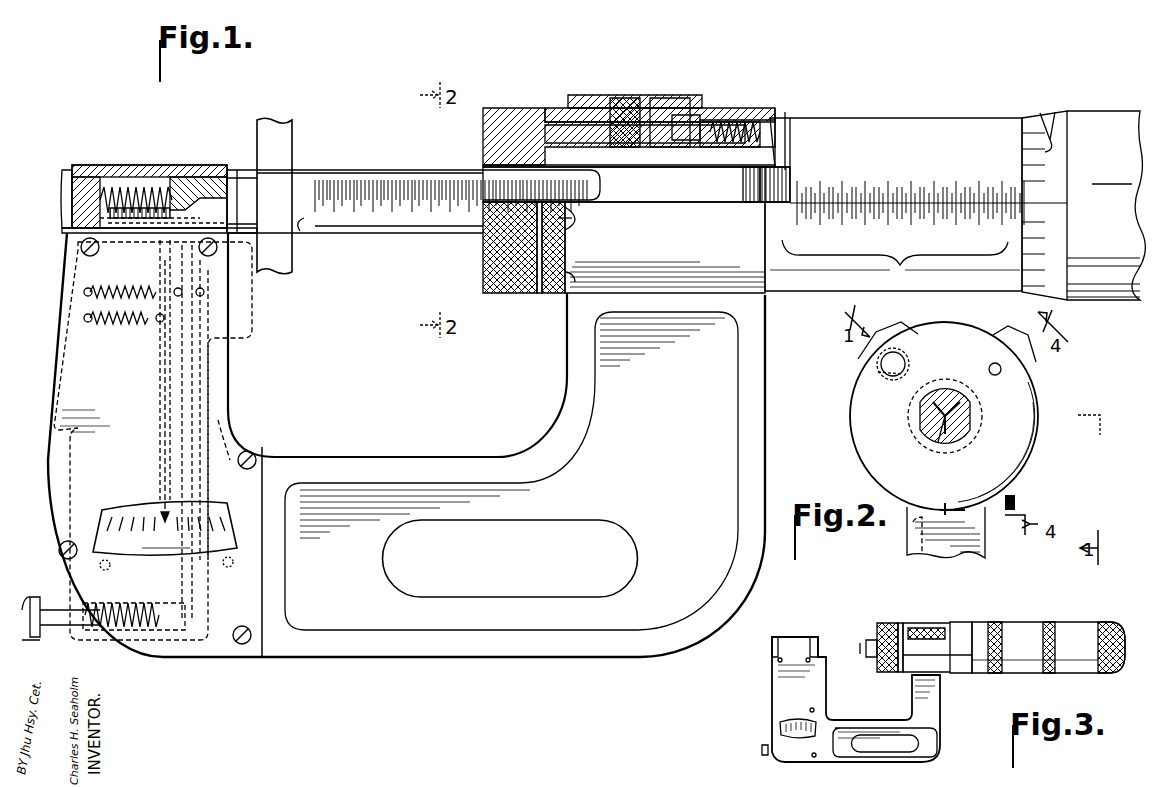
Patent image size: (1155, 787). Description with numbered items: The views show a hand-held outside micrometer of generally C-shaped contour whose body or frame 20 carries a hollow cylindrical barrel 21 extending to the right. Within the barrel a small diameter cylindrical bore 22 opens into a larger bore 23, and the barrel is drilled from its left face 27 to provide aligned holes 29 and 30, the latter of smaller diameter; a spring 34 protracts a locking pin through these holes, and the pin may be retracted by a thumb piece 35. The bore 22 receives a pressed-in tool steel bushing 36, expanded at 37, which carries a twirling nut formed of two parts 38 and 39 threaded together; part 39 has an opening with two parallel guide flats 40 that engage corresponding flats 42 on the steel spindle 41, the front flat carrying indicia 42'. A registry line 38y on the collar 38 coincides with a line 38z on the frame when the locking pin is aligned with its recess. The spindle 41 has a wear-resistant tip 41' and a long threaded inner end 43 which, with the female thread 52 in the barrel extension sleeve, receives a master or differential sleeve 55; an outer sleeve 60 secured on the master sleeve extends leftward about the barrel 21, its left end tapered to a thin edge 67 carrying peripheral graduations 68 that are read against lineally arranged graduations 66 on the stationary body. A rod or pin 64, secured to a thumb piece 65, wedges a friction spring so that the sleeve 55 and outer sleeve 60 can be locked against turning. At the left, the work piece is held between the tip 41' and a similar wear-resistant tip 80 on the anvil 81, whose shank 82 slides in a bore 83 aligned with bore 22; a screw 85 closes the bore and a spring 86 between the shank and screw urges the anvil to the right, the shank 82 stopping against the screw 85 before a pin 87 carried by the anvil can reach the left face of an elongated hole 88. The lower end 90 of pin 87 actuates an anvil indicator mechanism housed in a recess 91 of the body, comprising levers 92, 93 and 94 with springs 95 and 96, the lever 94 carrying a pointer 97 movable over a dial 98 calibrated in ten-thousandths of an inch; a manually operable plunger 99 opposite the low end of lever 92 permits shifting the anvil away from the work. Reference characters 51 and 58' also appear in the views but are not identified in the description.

In FIG. 1, the body or frame 20 is at (779, 370).
In FIG. 2, the body or frame 20 is at (903, 544).
In FIG. 3, the body or frame 20 is at (945, 718).
In FIG. 1, the hollow cylindrical barrel 21 is at (805, 140).
In FIG. 3, the hollow cylindrical barrel 21 is at (955, 622).
In FIG. 1, the small diameter cylindrical bore 22 is at (785, 118).
In FIG. 1, the larger diameter bore 23 is at (830, 150).
In FIG. 1, the left face of the barrel 27 is at (578, 296).
In FIG. 1, the hole 29 is at (570, 125).
In FIG. 2, the hole 29 is at (878, 376).
In FIG. 1, the hole 30 is at (750, 122).
In FIG. 2, the hole 30 is at (881, 365).
In FIG. 1, the spring 34 is at (730, 122).
In FIG. 1, the thumb piece 35 is at (588, 98).
In FIG. 2, the thumb piece 35 is at (896, 333).
In FIG. 1, the tool steel bushing 36 is at (680, 170).
In FIG. 1, the expanded portion of bushing 37 is at (485, 145).
In FIG. 1, the twirling nut part 38 is at (548, 296).
In FIG. 3, the twirling nut part 38 is at (900, 623).
In FIG. 1, the registry line 38y is at (580, 213).
In FIG. 1, the frame line 38z is at (578, 226).
In FIG. 1, the twirling nut part 39 is at (505, 296).
In FIG. 2, the twirling nut part 39 is at (962, 350).
In FIG. 3, the twirling nut part 39 is at (884, 623).
In FIG. 2, the guide flats 40 is at (918, 412).
In FIG. 1, the spindle 41 is at (413, 186).
In FIG. 2, the spindle 41 is at (936, 444).
In FIG. 3, the spindle 41 is at (859, 664).
In FIG. 1, the wear resistant tip 41' is at (309, 243).
In FIG. 3, the wear resistant tip 41' is at (850, 629).
In FIG. 1, the spindle flats 42 is at (395, 183).
In FIG. 2, the spindle flats 42 is at (887, 440).
In FIG. 1, the indicia 42' is at (536, 196).
In FIG. 1, the threaded inner end 43 is at (745, 188).
In FIG. 1, the pin 51 is at (692, 128).
In FIG. 1, the female thread 52 is at (618, 100).
In FIG. 1, the master or differential sleeve 55 is at (680, 112).
In FIG. 1, the head bore 58' is at (629, 123).
In FIG. 1, the outer sleeve 60 is at (1110, 111).
In FIG. 3, the outer sleeve 60 is at (1073, 622).
In FIG. 2, the rod or pin 64 is at (993, 362).
In FIG. 2, the thumb piece 65 is at (1035, 360).
In FIG. 3, the thumb piece 65 is at (925, 628).
In FIG. 1, the lineal graduations 66 is at (918, 224).
In FIG. 3, the lineal graduations 66 is at (950, 650).
In FIG. 1, the tapered thin edge 67 is at (1022, 130).
In FIG. 1, the peripheral graduations 68 is at (1048, 115).
In FIG. 1, the wear-resistant tip 80 is at (250, 170).
In FIG. 3, the wear-resistant tip 80 is at (822, 637).
In FIG. 1, the anvil 81 is at (242, 234).
In FIG. 1, the anvil shank 82 is at (118, 185).
In FIG. 1, the bore 83 is at (150, 180).
In FIG. 1, the screw 85 is at (62, 185).
In FIG. 3, the screw 85 is at (772, 642).
In FIG. 1, the spring 86 is at (90, 165).
In FIG. 1, the pin 87 is at (180, 177).
In FIG. 1, the elongated hole 88 is at (168, 240).
In FIG. 1, the lower end of pin 90 is at (180, 250).
In FIG. 1, the recess 91 is at (70, 445).
In FIG. 1, the lever 92 is at (200, 432).
In FIG. 1, the lever 93 is at (190, 400).
In FIG. 1, the lever 94 is at (160, 335).
In FIG. 1, the spring 95 is at (118, 285).
In FIG. 1, the spring 96 is at (108, 326).
In FIG. 1, the pointer 97 is at (165, 513).
In FIG. 1, the dial 98 is at (148, 556).
In FIG. 3, the dial 98 is at (800, 720).
In FIG. 1, the plunger 99 is at (25, 612).
In FIG. 3, the plunger 99 is at (762, 750).